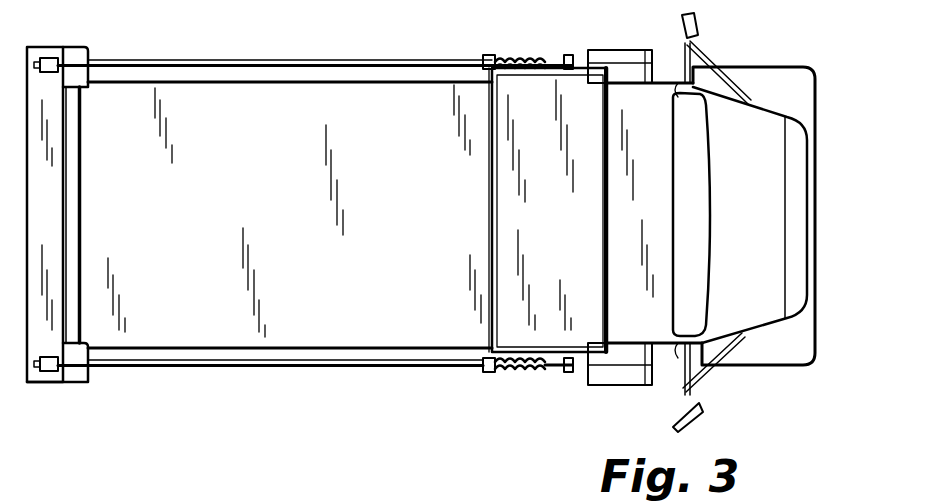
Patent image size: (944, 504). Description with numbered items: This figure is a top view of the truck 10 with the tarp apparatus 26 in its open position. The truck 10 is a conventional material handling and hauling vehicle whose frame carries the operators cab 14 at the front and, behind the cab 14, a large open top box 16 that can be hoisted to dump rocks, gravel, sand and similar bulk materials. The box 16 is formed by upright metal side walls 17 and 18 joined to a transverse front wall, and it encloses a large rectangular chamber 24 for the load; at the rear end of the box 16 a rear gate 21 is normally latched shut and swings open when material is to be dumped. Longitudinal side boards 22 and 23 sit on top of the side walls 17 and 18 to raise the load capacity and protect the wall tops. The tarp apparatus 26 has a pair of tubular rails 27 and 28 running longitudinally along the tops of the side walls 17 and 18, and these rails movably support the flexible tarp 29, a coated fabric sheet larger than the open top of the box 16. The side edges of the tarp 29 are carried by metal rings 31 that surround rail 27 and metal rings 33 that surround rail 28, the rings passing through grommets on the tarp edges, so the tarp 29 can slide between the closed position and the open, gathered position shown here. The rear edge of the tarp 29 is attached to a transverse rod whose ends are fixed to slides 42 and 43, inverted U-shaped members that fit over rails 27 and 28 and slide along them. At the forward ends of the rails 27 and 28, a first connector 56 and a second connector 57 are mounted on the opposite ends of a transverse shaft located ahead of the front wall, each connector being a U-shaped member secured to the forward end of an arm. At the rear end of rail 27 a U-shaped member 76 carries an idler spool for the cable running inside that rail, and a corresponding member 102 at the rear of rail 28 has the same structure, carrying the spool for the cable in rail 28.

The truck 10 is at (730, 58).
The operators cab 14 is at (652, 108).
The box 16 is at (575, 94).
The side wall 17 is at (208, 347).
The side wall 18 is at (220, 96).
The rear gate 21 is at (70, 230).
The side board 22 is at (133, 368).
The side board 23 is at (257, 62).
The chamber 24 is at (347, 208).
The tarp apparatus 26 is at (385, 95).
The rail 27 is at (208, 367).
The rail 28 is at (426, 60).
The tarp 29 is at (484, 310).
The rings 31 is at (518, 374).
The rings 33 is at (513, 58).
The slide 42 is at (488, 375).
The slide 43 is at (489, 55).
The first connector 56 is at (568, 56).
The second connector 57 is at (552, 374).
The U-shaped member 76 is at (43, 383).
The member 102 is at (62, 46).